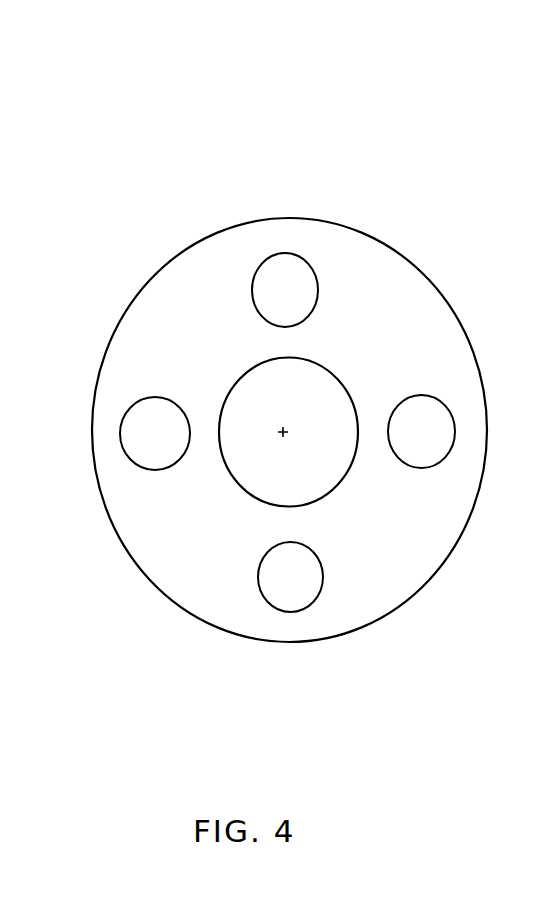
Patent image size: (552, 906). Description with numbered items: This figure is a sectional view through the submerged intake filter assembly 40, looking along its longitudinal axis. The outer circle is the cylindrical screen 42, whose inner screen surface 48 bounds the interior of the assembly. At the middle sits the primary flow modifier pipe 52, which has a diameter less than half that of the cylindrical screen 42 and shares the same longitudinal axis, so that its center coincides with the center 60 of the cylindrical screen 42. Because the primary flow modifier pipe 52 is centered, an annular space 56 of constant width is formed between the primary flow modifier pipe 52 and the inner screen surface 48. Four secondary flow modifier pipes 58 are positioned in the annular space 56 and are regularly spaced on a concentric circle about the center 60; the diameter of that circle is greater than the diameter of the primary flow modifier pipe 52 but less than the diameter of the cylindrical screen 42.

The submerged intake filter assembly 40 is at (302, 85).
The cylindrical screen 42 is at (377, 242).
The inner screen surface 48 is at (415, 545).
The primary flow modifier pipe 52 is at (343, 387).
The annular space 56 is at (205, 557).
The secondary flow modifier pipes 58 is at (297, 615).
The center 60 is at (283, 432).